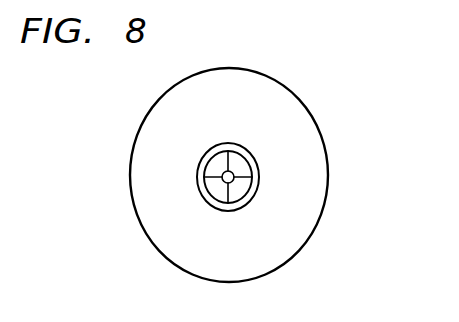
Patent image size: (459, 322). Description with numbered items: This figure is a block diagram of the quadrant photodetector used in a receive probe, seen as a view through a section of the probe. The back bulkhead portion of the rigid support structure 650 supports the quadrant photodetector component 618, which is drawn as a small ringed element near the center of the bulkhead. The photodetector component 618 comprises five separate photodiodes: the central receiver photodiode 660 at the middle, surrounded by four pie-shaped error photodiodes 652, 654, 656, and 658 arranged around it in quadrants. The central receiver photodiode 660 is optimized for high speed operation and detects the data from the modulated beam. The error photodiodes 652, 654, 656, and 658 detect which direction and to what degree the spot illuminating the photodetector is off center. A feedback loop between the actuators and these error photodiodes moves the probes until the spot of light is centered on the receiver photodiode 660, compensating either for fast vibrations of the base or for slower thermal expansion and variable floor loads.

The rigid support structure 650 is at (305, 109).
The error photodiode 654 is at (211, 148).
The error photodiode 656 is at (247, 152).
The quadrant photodetector component 618 is at (259, 182).
The error photodiode 652 is at (207, 205).
The error photodiode 658 is at (247, 201).
The central receiver photodiode 660 is at (226, 178).